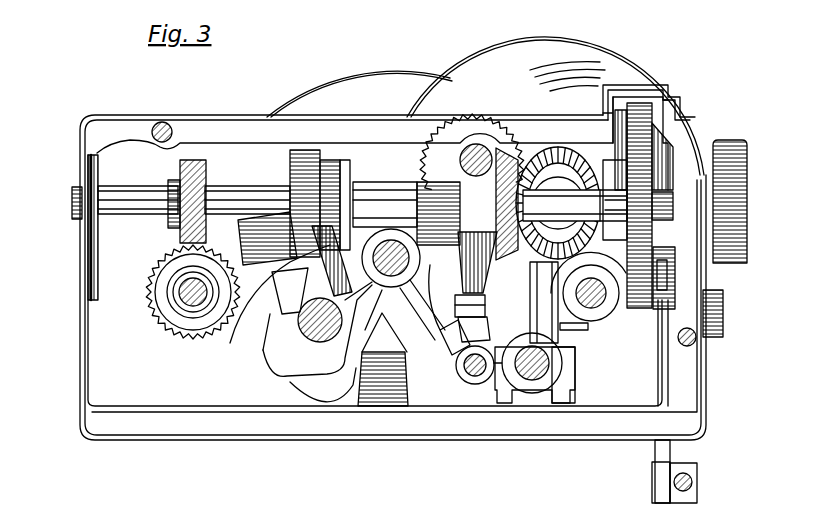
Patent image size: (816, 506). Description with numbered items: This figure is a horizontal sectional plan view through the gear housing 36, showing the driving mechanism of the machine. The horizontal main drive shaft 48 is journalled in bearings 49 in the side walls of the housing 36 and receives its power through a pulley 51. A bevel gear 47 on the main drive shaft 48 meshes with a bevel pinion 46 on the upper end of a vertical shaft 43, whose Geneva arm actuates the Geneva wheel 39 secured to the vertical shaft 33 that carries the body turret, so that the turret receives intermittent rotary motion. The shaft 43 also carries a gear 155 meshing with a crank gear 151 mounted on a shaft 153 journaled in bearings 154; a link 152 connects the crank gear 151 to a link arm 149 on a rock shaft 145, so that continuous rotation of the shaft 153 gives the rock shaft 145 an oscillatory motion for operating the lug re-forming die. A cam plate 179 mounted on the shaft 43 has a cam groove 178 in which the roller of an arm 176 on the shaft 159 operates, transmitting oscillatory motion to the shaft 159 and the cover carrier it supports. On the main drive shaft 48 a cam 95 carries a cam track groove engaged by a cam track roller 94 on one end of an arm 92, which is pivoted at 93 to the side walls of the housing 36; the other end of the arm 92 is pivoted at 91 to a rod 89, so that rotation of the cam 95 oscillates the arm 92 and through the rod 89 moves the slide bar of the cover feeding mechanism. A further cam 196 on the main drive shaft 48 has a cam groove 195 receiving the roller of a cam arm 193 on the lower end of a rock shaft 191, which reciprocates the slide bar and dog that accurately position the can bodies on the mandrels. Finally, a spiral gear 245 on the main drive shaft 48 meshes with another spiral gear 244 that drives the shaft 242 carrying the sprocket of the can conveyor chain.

The gear housing 36 is at (82, 345).
The vertical shaft 43 is at (548, 130).
The main drive shaft 48 is at (246, 195).
The bearings 49 is at (78, 232).
The spiral gear 245 is at (193, 160).
The spiral gear 244 is at (148, 300).
The shaft 242 is at (205, 318).
The cam 196 is at (310, 150).
The cam groove 195 is at (333, 160).
The link 152 is at (455, 345).
The crank gear 151 is at (462, 118).
The shaft 153 is at (477, 150).
The bevel gear 47 is at (508, 150).
The bevel pinion 46 is at (572, 150).
The gear 155 is at (612, 100).
The cam groove 178 is at (648, 125).
The cam plate 179 is at (664, 136).
The cam 95 is at (633, 168).
The pulley 51 is at (733, 188).
The cam track roller 94 is at (662, 282).
The pivot 93 is at (723, 312).
The arm 176 is at (586, 330).
The bearings 154 is at (576, 385).
The link arm 149 is at (486, 385).
The rock shaft 145 is at (533, 394).
The rock shaft 191 is at (292, 336).
The vertical shaft 33 is at (326, 372).
The Geneva wheel 39 is at (266, 345).
The cam arm 193 is at (240, 330).
The shaft 159 is at (613, 337).
The arm 92 is at (668, 450).
The pivot 91 is at (652, 486).
The rod 89 is at (697, 481).